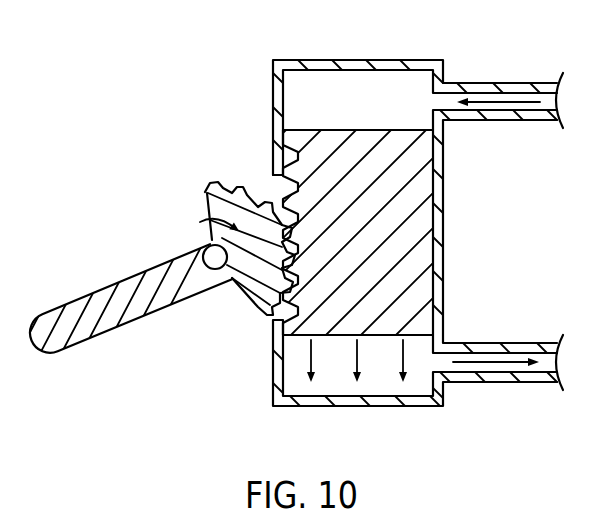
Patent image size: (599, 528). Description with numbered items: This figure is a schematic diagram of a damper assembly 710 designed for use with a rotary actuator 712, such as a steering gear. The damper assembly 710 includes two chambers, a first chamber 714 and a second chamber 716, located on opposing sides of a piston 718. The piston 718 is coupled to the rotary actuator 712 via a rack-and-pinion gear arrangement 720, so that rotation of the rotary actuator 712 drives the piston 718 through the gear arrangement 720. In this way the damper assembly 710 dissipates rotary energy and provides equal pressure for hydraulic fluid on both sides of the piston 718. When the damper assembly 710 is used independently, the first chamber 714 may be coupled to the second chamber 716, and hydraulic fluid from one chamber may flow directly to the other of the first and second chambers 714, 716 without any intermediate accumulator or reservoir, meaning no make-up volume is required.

The damper assembly 710 is at (125, 138).
The rotary actuator 712 is at (130, 270).
The first chamber 714 is at (413, 72).
The second chamber 716 is at (365, 392).
The piston 718 is at (386, 255).
The rack-and-pinion gear arrangement 720 is at (257, 158).